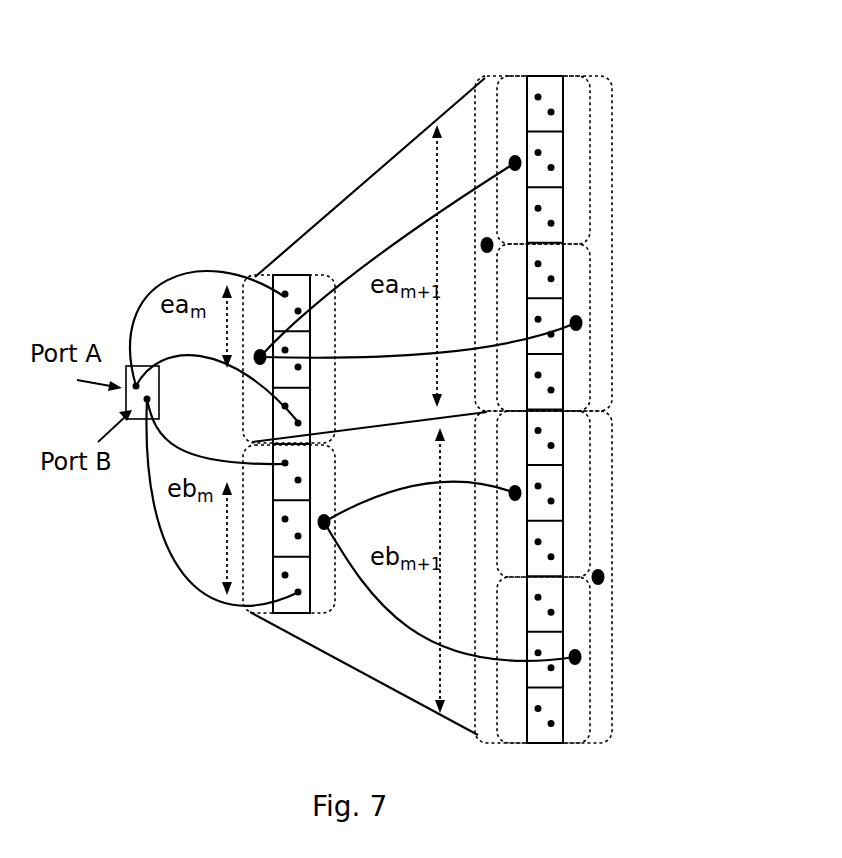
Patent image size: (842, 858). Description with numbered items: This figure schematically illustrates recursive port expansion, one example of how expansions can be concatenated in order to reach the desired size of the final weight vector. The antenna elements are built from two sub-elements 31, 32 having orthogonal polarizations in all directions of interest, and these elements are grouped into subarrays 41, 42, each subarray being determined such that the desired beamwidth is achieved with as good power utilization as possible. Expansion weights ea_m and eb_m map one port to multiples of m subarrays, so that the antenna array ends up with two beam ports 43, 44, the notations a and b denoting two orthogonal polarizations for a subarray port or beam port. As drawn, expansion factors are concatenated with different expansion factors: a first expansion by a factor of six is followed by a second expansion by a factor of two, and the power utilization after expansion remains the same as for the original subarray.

The sub-element 31 is at (261, 371).
The sub-element 32 is at (285, 297).
The subarray 41 is at (321, 277).
The subarray 42 is at (318, 613).
The beam port 43 is at (260, 357).
The beam port 44 is at (318, 530).